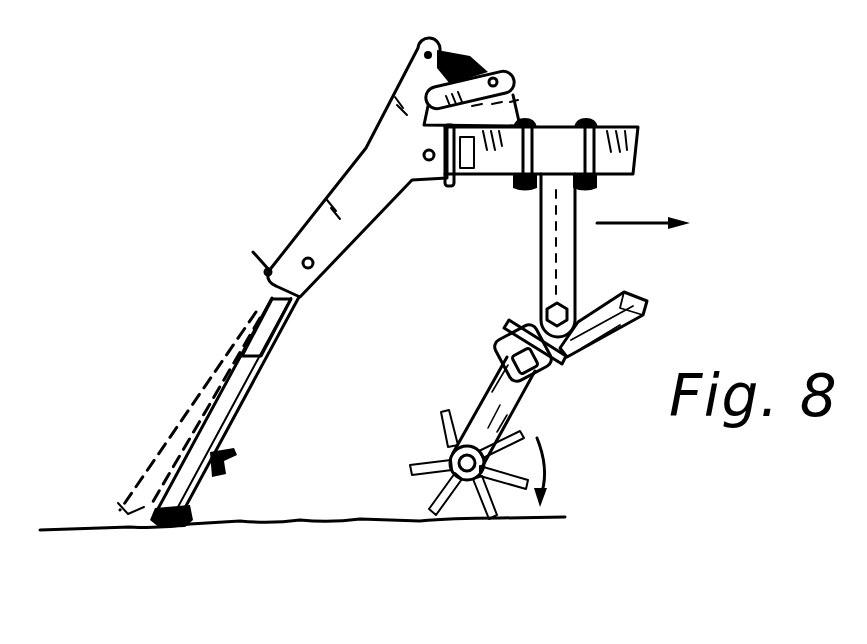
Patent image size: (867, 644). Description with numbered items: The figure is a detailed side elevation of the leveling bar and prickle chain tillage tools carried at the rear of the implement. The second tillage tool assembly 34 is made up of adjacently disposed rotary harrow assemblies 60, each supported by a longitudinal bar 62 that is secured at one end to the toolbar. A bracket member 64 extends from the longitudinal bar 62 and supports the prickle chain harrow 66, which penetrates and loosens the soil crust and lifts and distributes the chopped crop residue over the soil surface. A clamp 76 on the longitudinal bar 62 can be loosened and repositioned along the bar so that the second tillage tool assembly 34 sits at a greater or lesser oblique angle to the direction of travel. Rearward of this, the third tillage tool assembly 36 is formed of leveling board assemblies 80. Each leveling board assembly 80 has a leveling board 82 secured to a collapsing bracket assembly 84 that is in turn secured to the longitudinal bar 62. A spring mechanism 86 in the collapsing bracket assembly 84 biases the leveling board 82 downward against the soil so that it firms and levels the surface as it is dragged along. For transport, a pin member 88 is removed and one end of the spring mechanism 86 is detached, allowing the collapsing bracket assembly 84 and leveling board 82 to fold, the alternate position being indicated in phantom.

The second tillage tool assembly 34 is at (596, 456).
The third tillage tool assembly 36 is at (141, 416).
The rotary harrow assembly 60 is at (676, 304).
The longitudinal bar 62 is at (637, 128).
The bracket member 64 is at (547, 260).
The prickle chain harrow 66 is at (445, 418).
The clamp 76 is at (588, 119).
The leveling board assembly 80 is at (183, 357).
The leveling board 82 is at (197, 496).
The collapsing bracket assembly 84 is at (370, 157).
The spring mechanism 86 is at (474, 52).
The pin member 88 is at (266, 248).